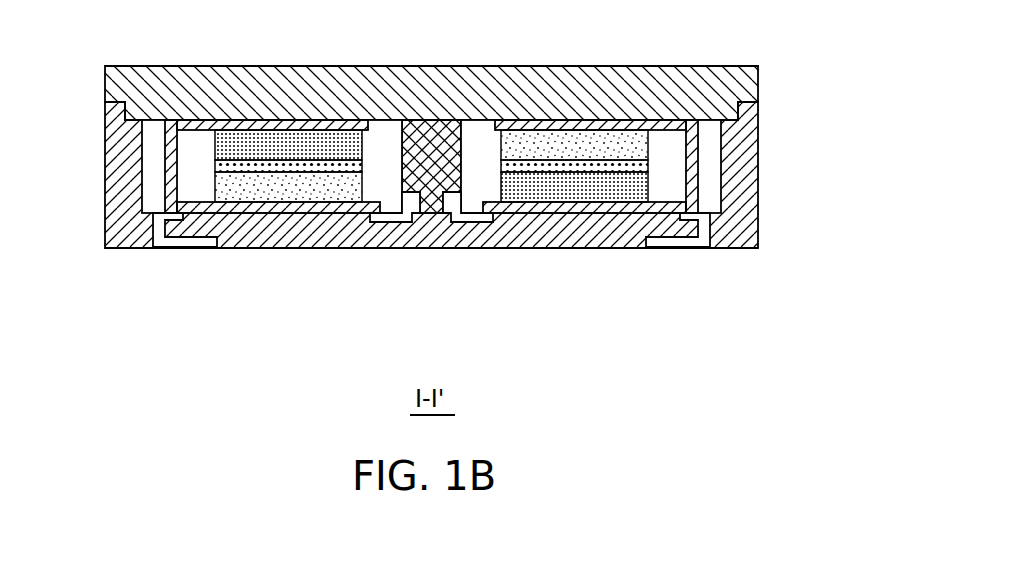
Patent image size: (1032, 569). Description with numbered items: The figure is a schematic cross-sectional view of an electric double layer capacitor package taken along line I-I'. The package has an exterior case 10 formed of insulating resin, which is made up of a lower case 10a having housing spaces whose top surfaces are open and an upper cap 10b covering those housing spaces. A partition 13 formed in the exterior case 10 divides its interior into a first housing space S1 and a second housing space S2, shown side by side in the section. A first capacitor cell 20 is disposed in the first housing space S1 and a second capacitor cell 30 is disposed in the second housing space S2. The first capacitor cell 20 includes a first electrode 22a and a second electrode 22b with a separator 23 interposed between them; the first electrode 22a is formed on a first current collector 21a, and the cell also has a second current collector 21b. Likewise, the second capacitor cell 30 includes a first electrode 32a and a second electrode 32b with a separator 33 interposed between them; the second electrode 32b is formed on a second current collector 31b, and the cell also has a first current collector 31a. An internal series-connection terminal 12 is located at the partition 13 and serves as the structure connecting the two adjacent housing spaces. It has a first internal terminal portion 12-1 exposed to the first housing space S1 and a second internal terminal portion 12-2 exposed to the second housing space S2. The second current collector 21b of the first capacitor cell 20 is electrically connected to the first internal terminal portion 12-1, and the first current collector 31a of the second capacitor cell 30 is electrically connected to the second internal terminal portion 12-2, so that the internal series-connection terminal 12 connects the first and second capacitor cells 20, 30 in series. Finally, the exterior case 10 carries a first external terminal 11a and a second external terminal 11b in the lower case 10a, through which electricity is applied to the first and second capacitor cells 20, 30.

The exterior case 10 is at (507, 156).
The lower case 10a is at (757, 118).
The upper cap 10b is at (757, 80).
The first external terminal 11a is at (183, 250).
The second external terminal 11b is at (674, 250).
The internal series-connection terminal 12 is at (425, 278).
The first internal terminal portion 12-1 is at (388, 222).
The second internal terminal portion 12-2 is at (475, 222).
The partition 13 is at (433, 137).
The first capacitor cell 20 is at (211, 220).
The first current collector 21a is at (172, 123).
The second current collector 21b is at (185, 205).
The first electrode 22a is at (225, 144).
The second electrode 22b is at (230, 186).
The separator 23 is at (230, 165).
The second capacitor cell 30 is at (667, 225).
The first current collector 31a is at (690, 208).
The second current collector 31b is at (692, 130).
The first electrode 32a is at (642, 190).
The second electrode 32b is at (642, 146).
The separator 33 is at (642, 184).
The first housing space S1 is at (392, 156).
The second housing space S2 is at (490, 156).